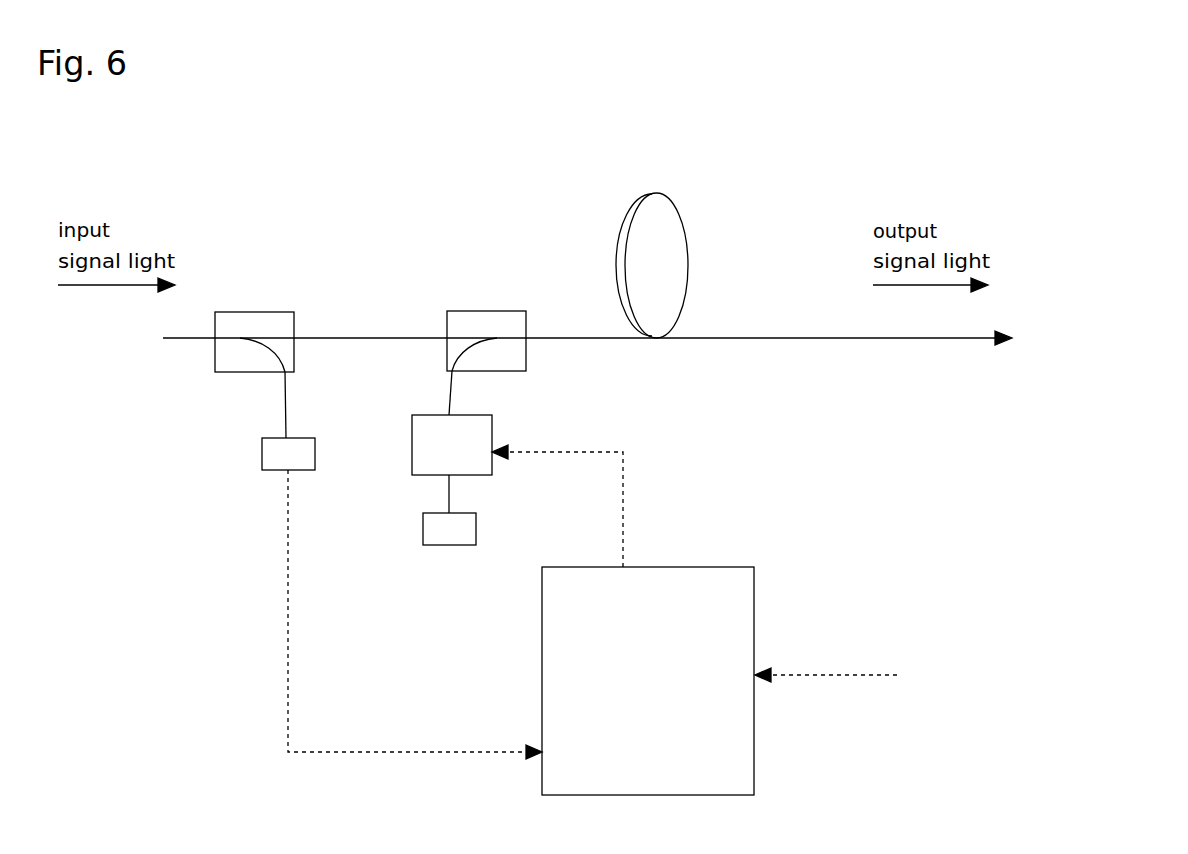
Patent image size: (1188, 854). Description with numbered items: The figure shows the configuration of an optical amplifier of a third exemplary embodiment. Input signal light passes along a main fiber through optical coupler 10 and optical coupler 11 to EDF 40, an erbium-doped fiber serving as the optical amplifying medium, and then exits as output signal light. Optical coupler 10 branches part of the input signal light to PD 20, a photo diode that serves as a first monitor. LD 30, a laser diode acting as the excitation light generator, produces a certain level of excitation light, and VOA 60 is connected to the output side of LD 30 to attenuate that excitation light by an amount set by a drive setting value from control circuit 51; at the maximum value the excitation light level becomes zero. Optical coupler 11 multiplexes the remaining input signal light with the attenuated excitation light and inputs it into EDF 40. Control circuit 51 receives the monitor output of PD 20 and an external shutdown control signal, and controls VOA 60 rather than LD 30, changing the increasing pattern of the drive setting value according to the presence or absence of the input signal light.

The optical coupler 10 is at (232, 312).
The optical coupler 11 is at (470, 311).
The PD (Photo Diode) 20 is at (262, 455).
The LD (Laser Diode) 30 is at (423, 530).
The EDF (Erbium-Doped Fiber) 40 is at (641, 194).
The control circuit 51 is at (705, 567).
The VOA (Variable Optical Attenuator) 60 is at (492, 432).